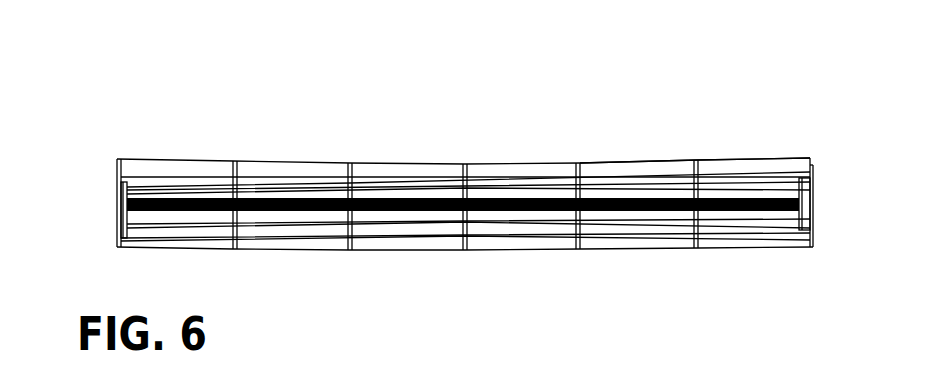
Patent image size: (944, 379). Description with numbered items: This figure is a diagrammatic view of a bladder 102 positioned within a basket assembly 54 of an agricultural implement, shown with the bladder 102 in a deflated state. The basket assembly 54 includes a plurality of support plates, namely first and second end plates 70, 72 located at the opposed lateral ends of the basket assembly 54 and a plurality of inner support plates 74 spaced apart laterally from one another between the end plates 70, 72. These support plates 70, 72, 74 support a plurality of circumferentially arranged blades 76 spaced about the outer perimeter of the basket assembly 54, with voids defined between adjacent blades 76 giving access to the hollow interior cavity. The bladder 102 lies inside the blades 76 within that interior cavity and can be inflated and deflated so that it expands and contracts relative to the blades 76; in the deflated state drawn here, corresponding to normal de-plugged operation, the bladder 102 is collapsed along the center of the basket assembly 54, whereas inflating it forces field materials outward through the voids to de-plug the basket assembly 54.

The basket assembly 54 is at (128, 104).
The first end plate 70 is at (115, 200).
The second end plate 72 is at (815, 200).
The inner support plate 74 is at (462, 242).
The blade 76 is at (648, 162).
The bladder 102 is at (302, 195).